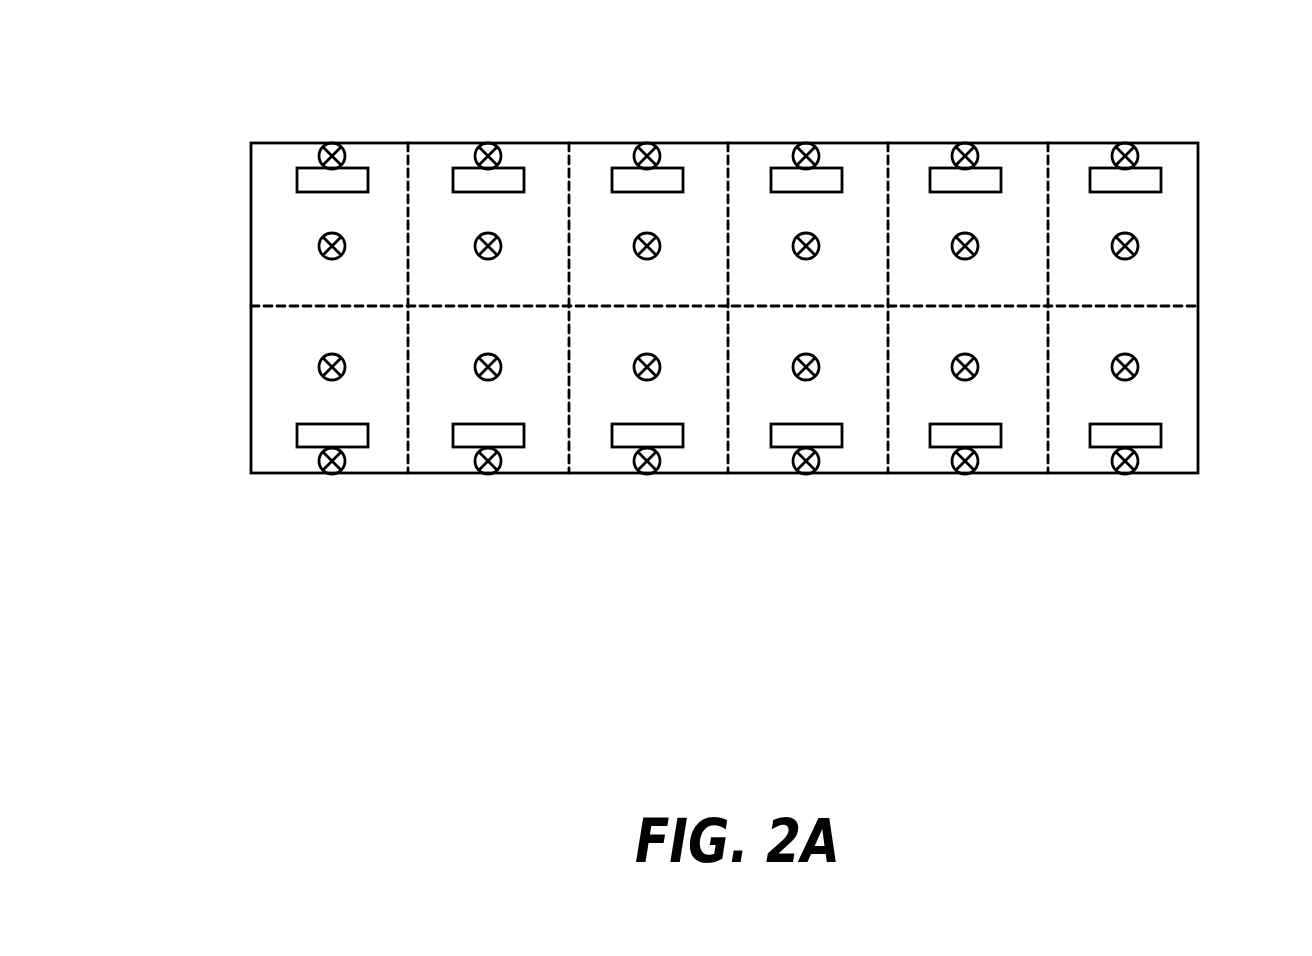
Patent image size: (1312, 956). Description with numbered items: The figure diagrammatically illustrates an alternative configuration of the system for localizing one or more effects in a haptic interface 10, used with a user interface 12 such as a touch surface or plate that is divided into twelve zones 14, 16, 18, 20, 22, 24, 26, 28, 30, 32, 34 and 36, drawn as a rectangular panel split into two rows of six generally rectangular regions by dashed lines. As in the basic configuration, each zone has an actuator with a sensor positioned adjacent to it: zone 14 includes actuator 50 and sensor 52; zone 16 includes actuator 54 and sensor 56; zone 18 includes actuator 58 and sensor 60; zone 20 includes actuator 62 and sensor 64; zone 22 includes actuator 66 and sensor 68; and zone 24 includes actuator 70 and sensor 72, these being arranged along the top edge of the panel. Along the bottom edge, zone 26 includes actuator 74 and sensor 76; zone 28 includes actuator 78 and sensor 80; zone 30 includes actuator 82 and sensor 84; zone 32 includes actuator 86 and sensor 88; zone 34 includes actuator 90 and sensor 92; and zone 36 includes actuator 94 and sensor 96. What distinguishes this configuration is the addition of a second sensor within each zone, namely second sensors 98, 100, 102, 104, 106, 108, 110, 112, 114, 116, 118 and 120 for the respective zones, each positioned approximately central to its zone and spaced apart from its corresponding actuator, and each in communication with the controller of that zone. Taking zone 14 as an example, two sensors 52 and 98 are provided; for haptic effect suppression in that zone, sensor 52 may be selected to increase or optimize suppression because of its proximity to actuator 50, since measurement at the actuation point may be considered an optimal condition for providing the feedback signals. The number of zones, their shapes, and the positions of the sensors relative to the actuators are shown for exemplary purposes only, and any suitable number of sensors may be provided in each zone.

The system for localizing one or more effects in a haptic interface 10 is at (147, 170).
The user interface 12 is at (1187, 183).
The zone 14 is at (390, 158).
The zone 16 is at (553, 156).
The zone 18 is at (707, 158).
The zone 20 is at (868, 155).
The zone 22 is at (1030, 156).
The zone 24 is at (1181, 155).
The zone 26 is at (275, 462).
The zone 28 is at (435, 462).
The zone 30 is at (595, 462).
The zone 32 is at (755, 462).
The zone 34 is at (928, 462).
The zone 36 is at (1075, 462).
The actuator 50 is at (297, 171).
The sensor 52 is at (332, 144).
The actuator 54 is at (462, 166).
The sensor 56 is at (490, 145).
The actuator 58 is at (614, 162).
The sensor 60 is at (648, 146).
The actuator 62 is at (773, 158).
The sensor 64 is at (810, 146).
The actuator 66 is at (934, 162).
The sensor 68 is at (966, 147).
The actuator 70 is at (1088, 162).
The sensor 72 is at (1126, 147).
The actuator 74 is at (368, 448).
The sensor 76 is at (322, 472).
The actuator 78 is at (525, 448).
The sensor 80 is at (480, 472).
The actuator 82 is at (686, 448).
The sensor 84 is at (637, 472).
The actuator 86 is at (846, 448).
The sensor 88 is at (798, 472).
The actuator 90 is at (1001, 448).
The sensor 92 is at (982, 472).
The actuator 94 is at (1160, 448).
The sensor 96 is at (1140, 472).
The second sensor 98 is at (319, 246).
The second sensor 100 is at (501, 247).
The second sensor 102 is at (660, 247).
The second sensor 104 is at (819, 247).
The second sensor 106 is at (978, 247).
The second sensor 108 is at (1138, 246).
The second sensor 110 is at (319, 368).
The second sensor 112 is at (501, 370).
The second sensor 114 is at (660, 370).
The second sensor 116 is at (819, 370).
The second sensor 118 is at (978, 370).
The second sensor 120 is at (1138, 369).